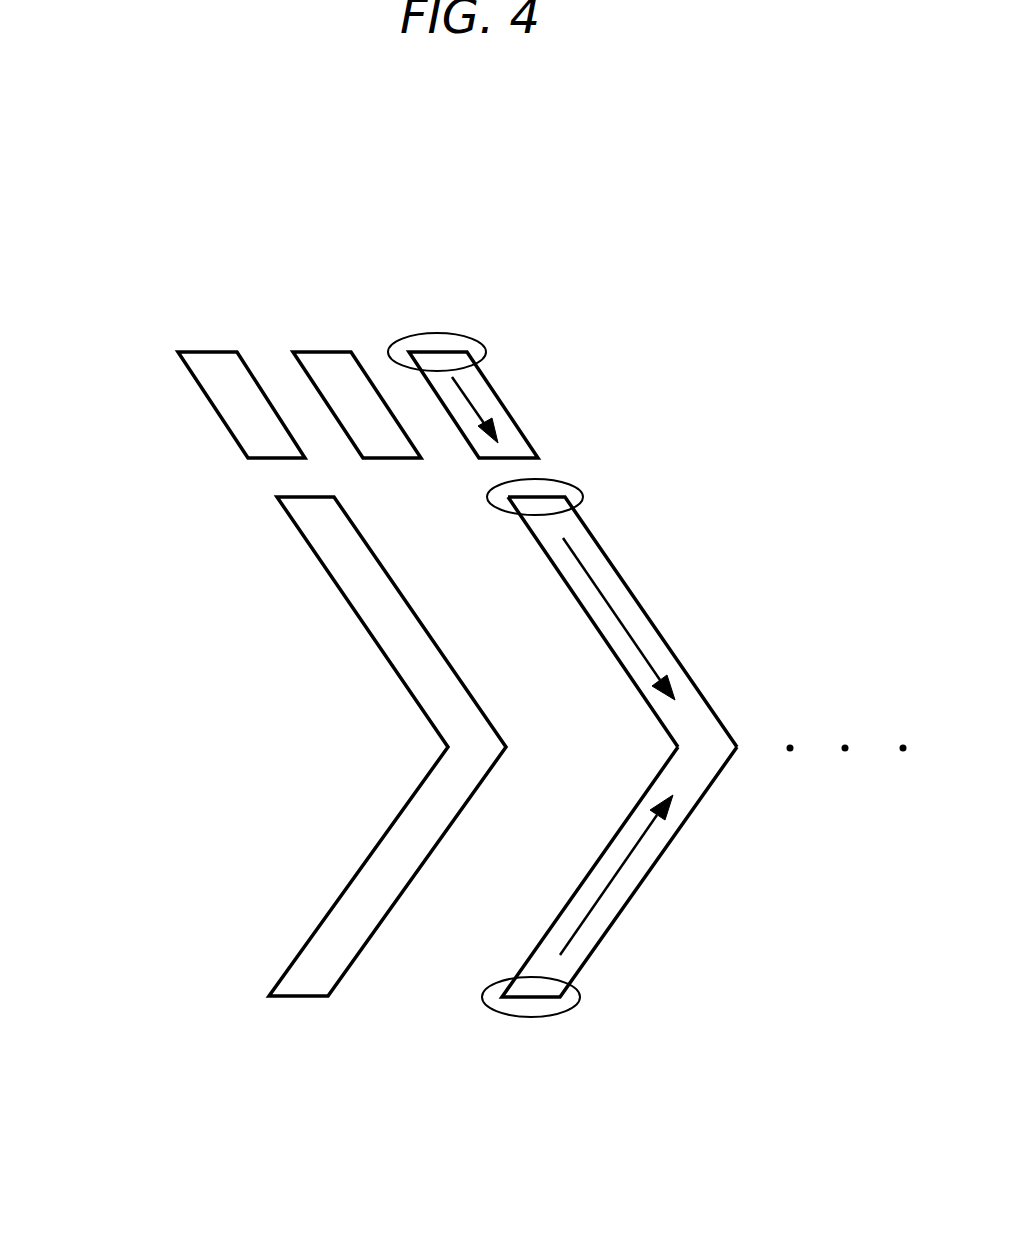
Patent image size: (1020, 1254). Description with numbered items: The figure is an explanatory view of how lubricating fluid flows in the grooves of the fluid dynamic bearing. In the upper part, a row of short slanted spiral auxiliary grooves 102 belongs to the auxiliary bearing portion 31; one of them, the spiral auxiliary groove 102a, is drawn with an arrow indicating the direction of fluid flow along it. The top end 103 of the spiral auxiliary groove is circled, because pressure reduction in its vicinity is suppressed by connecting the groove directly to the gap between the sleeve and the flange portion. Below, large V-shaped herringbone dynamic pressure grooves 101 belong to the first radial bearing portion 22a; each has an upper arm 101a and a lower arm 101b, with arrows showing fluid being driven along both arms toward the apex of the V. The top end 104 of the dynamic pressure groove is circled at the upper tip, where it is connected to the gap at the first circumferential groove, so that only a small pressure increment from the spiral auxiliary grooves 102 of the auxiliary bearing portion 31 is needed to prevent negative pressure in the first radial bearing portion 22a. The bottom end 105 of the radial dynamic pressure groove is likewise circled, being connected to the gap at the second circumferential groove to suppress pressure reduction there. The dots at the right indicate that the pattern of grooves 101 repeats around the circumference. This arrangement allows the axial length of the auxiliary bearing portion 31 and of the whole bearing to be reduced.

The auxiliary bearing portion 31 is at (175, 340).
The spiral auxiliary groove 102 is at (223, 421).
The spiral auxiliary groove 102a is at (472, 395).
The top end of spiral auxiliary groove 103 is at (437, 333).
The top end of dynamic pressure groove 104 is at (578, 482).
The bottom end of radial dynamic pressure groove 105 is at (533, 1015).
The herringbone dynamic pressure groove 101 is at (365, 628).
The upper arm of herringbone dynamic pressure groove 101a is at (618, 613).
The lower arm of herringbone dynamic pressure groove 101b is at (613, 885).
The first radial bearing portion 22a is at (258, 1015).